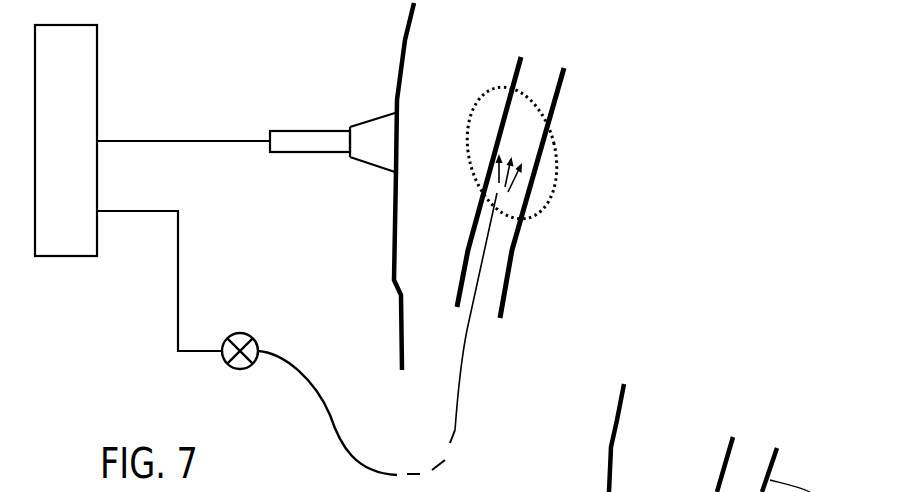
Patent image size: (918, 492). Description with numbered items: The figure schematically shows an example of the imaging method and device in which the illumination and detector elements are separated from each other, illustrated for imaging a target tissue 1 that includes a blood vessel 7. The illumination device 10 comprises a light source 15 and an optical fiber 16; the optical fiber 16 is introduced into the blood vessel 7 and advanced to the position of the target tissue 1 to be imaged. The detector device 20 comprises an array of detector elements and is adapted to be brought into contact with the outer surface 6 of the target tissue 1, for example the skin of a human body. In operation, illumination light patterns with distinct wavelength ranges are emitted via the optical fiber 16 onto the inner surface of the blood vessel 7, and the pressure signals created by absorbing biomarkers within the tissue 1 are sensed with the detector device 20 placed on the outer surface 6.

The target tissue 1 is at (547, 182).
The outer surface 6 is at (396, 97).
The blood vessel 7 is at (558, 98).
The illumination device 10 is at (352, 322).
The light source 15 is at (241, 366).
The optical fiber 16 is at (485, 252).
The detector device 20 is at (282, 143).